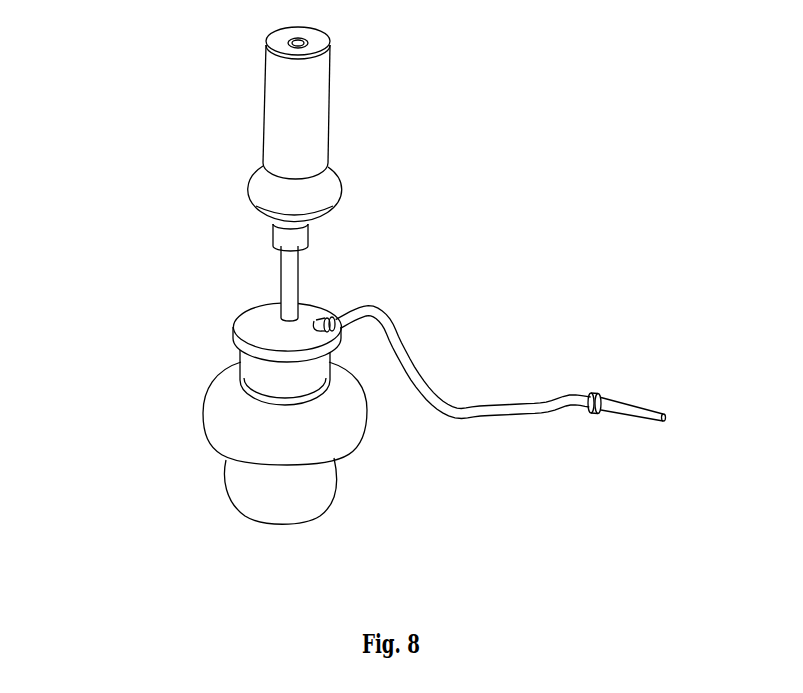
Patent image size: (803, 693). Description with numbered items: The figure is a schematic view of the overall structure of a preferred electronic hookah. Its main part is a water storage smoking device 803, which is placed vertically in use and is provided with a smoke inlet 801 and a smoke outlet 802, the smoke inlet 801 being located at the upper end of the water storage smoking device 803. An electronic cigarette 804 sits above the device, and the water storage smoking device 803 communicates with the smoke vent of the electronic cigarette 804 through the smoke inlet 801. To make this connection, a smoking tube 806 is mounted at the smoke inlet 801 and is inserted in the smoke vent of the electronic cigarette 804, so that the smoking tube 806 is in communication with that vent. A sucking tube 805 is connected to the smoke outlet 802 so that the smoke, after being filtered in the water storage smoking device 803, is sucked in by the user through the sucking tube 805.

The smoke inlet 801 is at (262, 311).
The smoke outlet 802 is at (322, 321).
The water storage smoking device 803 is at (233, 398).
The electronic cigarette 804 is at (472, 122).
The sucking tube 805 is at (624, 312).
The smoking tube 806 is at (290, 272).